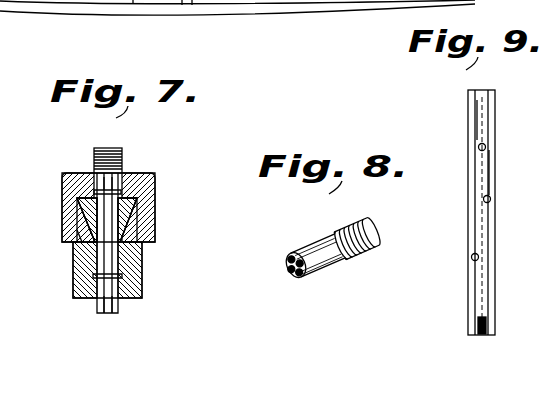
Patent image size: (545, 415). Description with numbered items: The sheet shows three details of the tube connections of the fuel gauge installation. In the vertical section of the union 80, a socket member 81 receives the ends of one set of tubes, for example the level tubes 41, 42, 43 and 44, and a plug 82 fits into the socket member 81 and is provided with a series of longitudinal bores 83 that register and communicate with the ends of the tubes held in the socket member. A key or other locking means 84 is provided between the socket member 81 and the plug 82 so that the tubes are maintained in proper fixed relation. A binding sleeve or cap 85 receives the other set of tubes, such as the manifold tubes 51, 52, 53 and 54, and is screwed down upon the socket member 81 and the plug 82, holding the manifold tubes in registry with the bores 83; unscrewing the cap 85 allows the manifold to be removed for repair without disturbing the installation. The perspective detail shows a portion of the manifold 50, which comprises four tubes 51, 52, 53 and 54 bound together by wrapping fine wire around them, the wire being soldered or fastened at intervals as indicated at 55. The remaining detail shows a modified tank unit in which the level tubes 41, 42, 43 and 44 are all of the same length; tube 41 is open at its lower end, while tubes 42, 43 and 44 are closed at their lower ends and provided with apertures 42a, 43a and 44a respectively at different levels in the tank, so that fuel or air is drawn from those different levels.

In FIG. 7, the level tube 41 is at (118, 311).
In FIG. 9, the level tube 42 is at (475, 290).
In FIG. 9, the aperture 42a is at (472, 259).
In FIG. 7, the level tube 43 is at (108, 313).
In FIG. 9, the level tube 43 is at (491, 192).
In FIG. 9, the aperture 43a is at (484, 203).
In FIG. 7, the level tube 44 is at (100, 310).
In FIG. 9, the level tube 44 is at (478, 120).
In FIG. 9, the aperture 44a is at (480, 147).
In FIG. 7, the manifold 50 is at (91, 142).
In FIG. 7, the manifold tube 51 is at (156, 193).
In FIG. 8, the manifold tube 51 is at (295, 280).
In FIG. 8, the manifold tube 52 is at (308, 275).
In FIG. 7, the manifold tube 53 is at (96, 184).
In FIG. 8, the manifold tube 53 is at (300, 255).
In FIG. 7, the manifold tube 54 is at (100, 177).
In FIG. 8, the manifold tube 54 is at (287, 267).
In FIG. 8, the threaded sleeve 55 is at (371, 250).
In FIG. 7, the union 80 is at (193, 175).
In FIG. 7, the socket member 81 is at (80, 278).
In FIG. 7, the plug 82 is at (143, 248).
In FIG. 7, the longitudinal bores 83 is at (98, 223).
In FIG. 7, the key 84 is at (151, 223).
In FIG. 7, the binding sleeve 85 is at (133, 178).